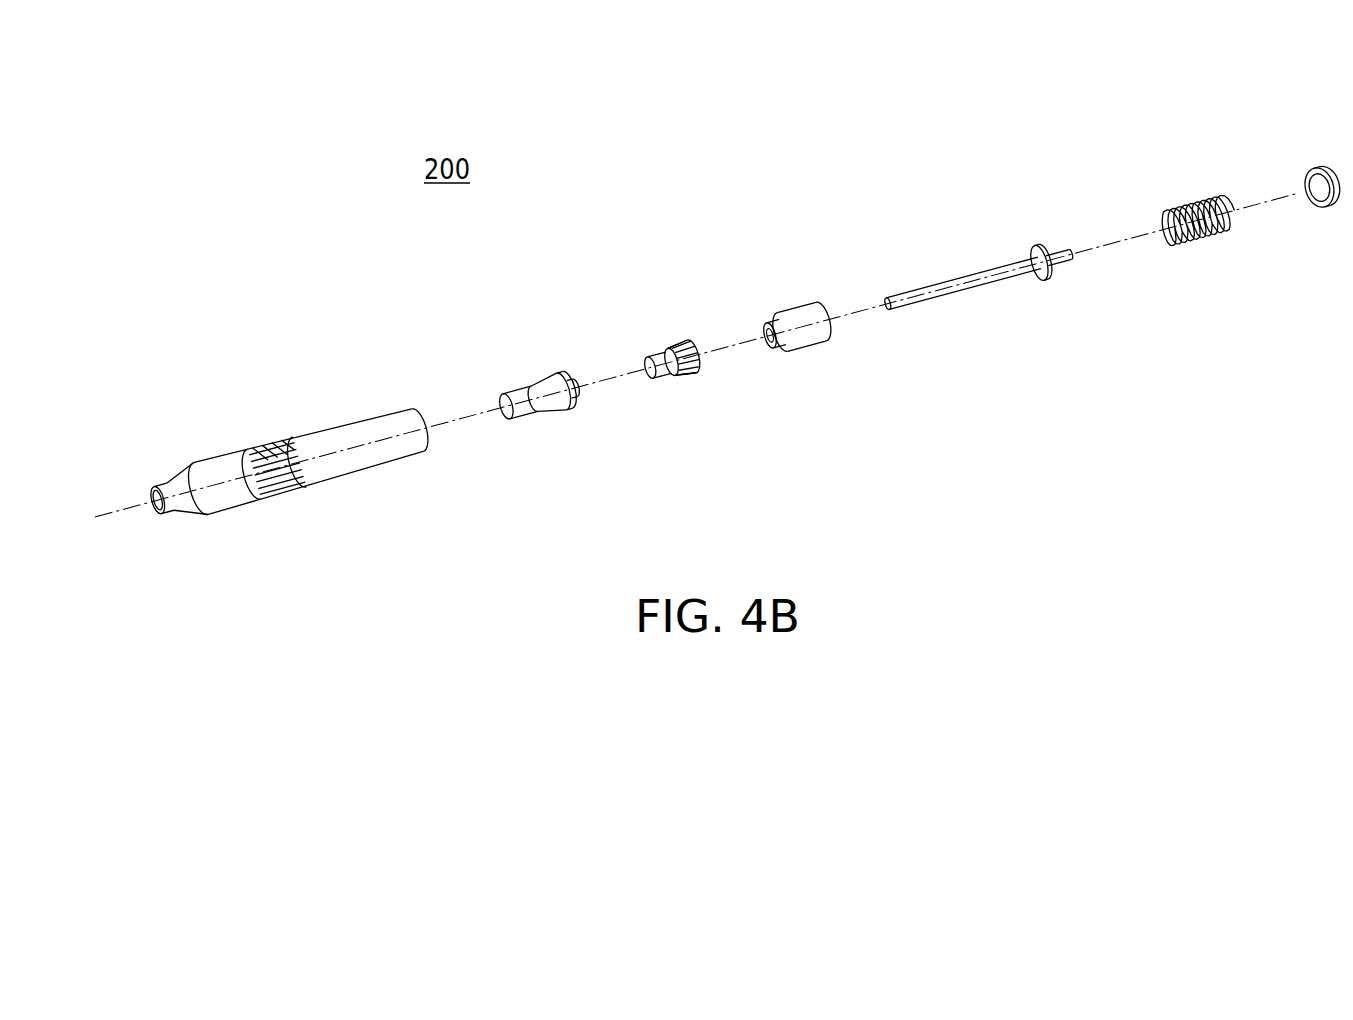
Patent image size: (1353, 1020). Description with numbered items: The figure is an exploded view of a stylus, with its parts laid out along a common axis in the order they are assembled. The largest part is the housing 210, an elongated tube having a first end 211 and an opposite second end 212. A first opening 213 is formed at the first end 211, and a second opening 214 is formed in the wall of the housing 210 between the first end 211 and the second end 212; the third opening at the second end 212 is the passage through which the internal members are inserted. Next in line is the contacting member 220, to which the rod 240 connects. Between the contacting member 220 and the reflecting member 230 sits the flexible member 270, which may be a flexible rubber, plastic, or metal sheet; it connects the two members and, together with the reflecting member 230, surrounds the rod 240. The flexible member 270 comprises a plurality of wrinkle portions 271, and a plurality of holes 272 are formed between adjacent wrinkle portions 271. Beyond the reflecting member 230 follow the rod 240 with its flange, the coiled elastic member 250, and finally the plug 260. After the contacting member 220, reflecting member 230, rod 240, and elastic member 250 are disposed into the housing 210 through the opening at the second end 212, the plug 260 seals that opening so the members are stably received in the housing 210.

The housing 210 is at (333, 440).
The first end 211 is at (153, 478).
The second end 212 is at (409, 406).
The first opening 213 is at (160, 508).
The second opening 214 is at (265, 452).
The contacting member 220 is at (517, 400).
The reflecting member 230 is at (798, 322).
The rod 240 is at (957, 284).
The elastic member 250 is at (1192, 205).
The plug 260 is at (1322, 165).
The flexible member 270 is at (659, 355).
The wrinkle portions 271 is at (686, 347).
The holes 272 is at (688, 378).